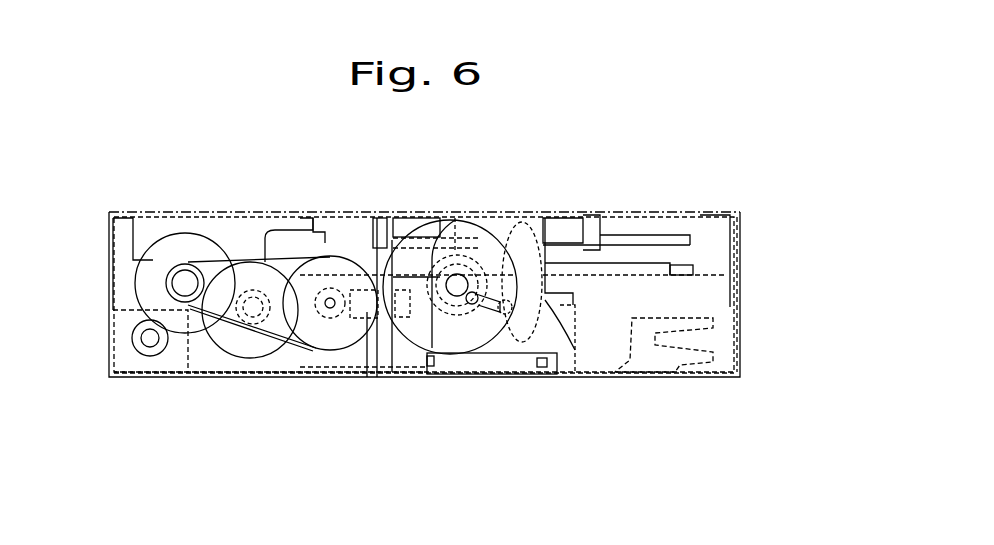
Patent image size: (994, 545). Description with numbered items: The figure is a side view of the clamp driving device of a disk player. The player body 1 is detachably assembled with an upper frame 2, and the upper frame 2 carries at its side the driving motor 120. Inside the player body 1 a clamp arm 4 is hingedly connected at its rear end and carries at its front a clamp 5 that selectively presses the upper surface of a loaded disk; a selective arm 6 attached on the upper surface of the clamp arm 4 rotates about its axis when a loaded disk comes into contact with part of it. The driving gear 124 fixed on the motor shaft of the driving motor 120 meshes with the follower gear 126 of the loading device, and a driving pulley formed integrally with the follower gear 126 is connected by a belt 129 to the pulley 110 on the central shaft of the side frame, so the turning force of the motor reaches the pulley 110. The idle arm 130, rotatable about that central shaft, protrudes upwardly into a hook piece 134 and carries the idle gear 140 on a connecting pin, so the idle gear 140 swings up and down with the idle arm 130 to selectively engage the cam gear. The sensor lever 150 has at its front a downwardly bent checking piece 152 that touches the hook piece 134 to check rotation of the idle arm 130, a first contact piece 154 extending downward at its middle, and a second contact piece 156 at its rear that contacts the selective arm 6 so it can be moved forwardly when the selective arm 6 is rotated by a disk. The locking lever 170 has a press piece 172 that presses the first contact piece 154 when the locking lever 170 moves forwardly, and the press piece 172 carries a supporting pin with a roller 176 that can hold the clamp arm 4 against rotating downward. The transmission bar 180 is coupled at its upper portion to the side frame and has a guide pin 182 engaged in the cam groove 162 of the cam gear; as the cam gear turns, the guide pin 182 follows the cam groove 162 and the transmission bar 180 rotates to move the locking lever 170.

The player body 1 is at (110, 343).
The upper frame 2 is at (257, 212).
The clamp arm 4 is at (685, 253).
The clamp 5 is at (433, 352).
The selective arm 6 is at (645, 228).
The pulley 110 is at (322, 348).
The driving motor 120 is at (130, 375).
The driving gear 124 is at (157, 343).
The follower gear 126 is at (178, 235).
The belt 129 is at (226, 350).
The idle arm 130 is at (340, 265).
The hook piece 134 is at (432, 218).
The idle gear 140 is at (373, 335).
The sensor lever 150 is at (563, 220).
The checking piece 152 is at (397, 238).
The first contact piece 154 is at (460, 218).
The second contact piece 156 is at (612, 228).
The cam groove 162 is at (470, 352).
The locking lever 170 is at (655, 365).
The press piece 172 is at (503, 356).
The roller 176 is at (575, 356).
The transmission bar 180 is at (517, 228).
The guide pin 182 is at (540, 352).